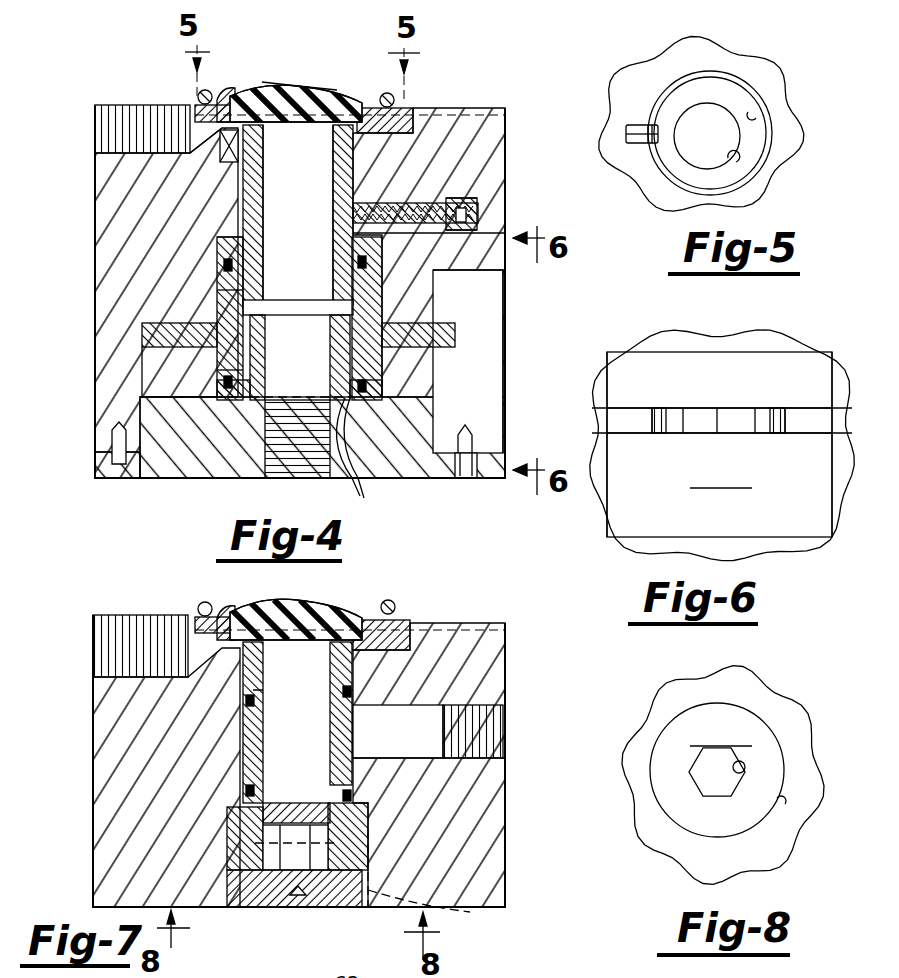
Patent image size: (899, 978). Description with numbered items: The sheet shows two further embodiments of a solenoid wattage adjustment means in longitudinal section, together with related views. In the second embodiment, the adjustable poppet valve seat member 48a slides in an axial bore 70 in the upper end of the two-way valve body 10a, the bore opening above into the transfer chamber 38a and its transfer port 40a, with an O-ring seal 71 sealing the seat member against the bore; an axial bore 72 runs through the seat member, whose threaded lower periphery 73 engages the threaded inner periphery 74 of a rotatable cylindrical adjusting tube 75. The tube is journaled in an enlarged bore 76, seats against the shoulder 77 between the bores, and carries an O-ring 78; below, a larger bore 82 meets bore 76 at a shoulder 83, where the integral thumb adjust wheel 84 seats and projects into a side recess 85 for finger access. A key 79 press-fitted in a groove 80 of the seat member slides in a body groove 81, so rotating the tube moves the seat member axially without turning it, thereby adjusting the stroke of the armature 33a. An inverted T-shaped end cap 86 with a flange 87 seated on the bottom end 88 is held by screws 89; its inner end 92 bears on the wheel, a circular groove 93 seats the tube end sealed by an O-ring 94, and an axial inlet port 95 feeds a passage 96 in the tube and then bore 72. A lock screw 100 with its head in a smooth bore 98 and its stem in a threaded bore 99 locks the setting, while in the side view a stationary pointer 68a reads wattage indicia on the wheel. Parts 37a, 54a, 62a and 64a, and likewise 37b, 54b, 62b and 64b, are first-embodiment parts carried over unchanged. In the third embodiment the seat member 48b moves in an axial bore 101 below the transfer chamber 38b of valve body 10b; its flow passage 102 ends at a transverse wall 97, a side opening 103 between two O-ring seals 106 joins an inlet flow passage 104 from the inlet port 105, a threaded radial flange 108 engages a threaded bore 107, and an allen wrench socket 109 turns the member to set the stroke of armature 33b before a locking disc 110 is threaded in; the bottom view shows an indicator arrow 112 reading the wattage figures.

In FIG. 4, the two-way valve body 10a is at (92, 322).
In FIG. 5, the two-way valve body 10a is at (798, 146).
In FIG. 6, the two-way valve body 10a is at (631, 340).
In FIG. 7, the valve body 10b is at (92, 836).
In FIG. 8, the valve body 10b is at (630, 811).
In FIG. 4, the armature 33a is at (224, 96).
In FIG. 7, the armature 33b is at (221, 606).
In FIG. 4, the mounting flange 37a is at (196, 108).
In FIG. 7, the mounting flange 37b is at (200, 620).
In FIG. 4, the transfer chamber 38a is at (398, 125).
In FIG. 7, the transfer chamber 38b is at (400, 626).
In FIG. 4, the transfer port 40a is at (122, 132).
In FIG. 4, the adjustable poppet valve seat member 48a is at (472, 158).
In FIG. 5, the adjustable poppet valve seat member 48a is at (740, 106).
In FIG. 7, the adjustable poppet valve seat member 48b is at (362, 672).
In FIG. 8, the adjustable poppet valve seat member 48b is at (676, 830).
In FIG. 4, the center axis / window 54a is at (318, 122).
In FIG. 5, the center axis / window 54a is at (767, 128).
In FIG. 7, the center axis / window 54b is at (318, 646).
In FIG. 4, the window element 62a is at (328, 86).
In FIG. 7, the window element 62b is at (335, 608).
In FIG. 4, the retaining screw 64a is at (393, 100).
In FIG. 7, the retaining screw 64b is at (393, 607).
In FIG. 6, the stationary pointer 68a is at (720, 403).
In FIG. 4, the axial bore 70 is at (260, 205).
In FIG. 5, the axial bore 70 is at (765, 120).
In FIG. 4, the O-ring seal 71 is at (208, 152).
In FIG. 4, the axial bore 72 is at (494, 126).
In FIG. 5, the axial bore 72 is at (732, 160).
In FIG. 4, the threaded lower outer periphery 73 is at (335, 240).
In FIG. 4, the threaded inner periphery 74 is at (318, 332).
In FIG. 4, the cylindrical adjusting tube 75 is at (434, 301).
In FIG. 4, the enlarged diameter bore 76 is at (220, 286).
In FIG. 4, the shoulder 77 is at (225, 240).
In FIG. 4, the O-ring 78 is at (222, 265).
In FIG. 4, the key 79 is at (238, 115).
In FIG. 5, the key 79 is at (640, 126).
In FIG. 4, the longitudinal groove 80 is at (284, 86).
In FIG. 5, the longitudinal groove 80 is at (660, 126).
In FIG. 4, the longitudinal groove 81 is at (222, 145).
In FIG. 5, the longitudinal groove 81 is at (627, 130).
In FIG. 4, the larger diameter bore 82 is at (150, 366).
In FIG. 4, the shoulder 83 is at (150, 326).
In FIG. 6, the shoulder 83 is at (635, 412).
In FIG. 4, the thumb adjust wheel 84 is at (458, 344).
In FIG. 6, the thumb adjust wheel 84 is at (780, 410).
In FIG. 4, the recess 85 is at (492, 272).
In FIG. 6, the recess 85 is at (832, 368).
In FIG. 4, the end cap 86 is at (190, 478).
In FIG. 6, the end cap 86 is at (800, 540).
In FIG. 4, the flange 87 is at (503, 455).
In FIG. 4, the bottom end 88 is at (100, 458).
In FIG. 4, the screws 89 is at (105, 470).
In FIG. 4, the inner end 92 is at (152, 340).
In FIG. 6, the inner end 92 is at (640, 426).
In FIG. 4, the circular groove 93 is at (359, 457).
In FIG. 4, the O-ring seal 94 is at (222, 384).
In FIG. 4, the inlet port 95 is at (270, 470).
In FIG. 4, the passage 96 is at (282, 306).
In FIG. 7, the transverse wall 97 is at (278, 805).
In FIG. 4, the smooth face bore 98 is at (506, 226).
In FIG. 4, the threaded bore 99 is at (470, 197).
In FIG. 4, the lock screw 100 is at (478, 212).
In FIG. 7, the axial bore 101 is at (242, 745).
In FIG. 7, the flow passage 102 is at (245, 770).
In FIG. 7, the opening 103 is at (340, 717).
In FIG. 7, the inlet flow passage 104 is at (470, 766).
In FIG. 7, the inlet port 105 is at (466, 738).
In FIG. 7, the O-ring seals 106 is at (342, 690).
In FIG. 7, the threaded bore 107 is at (432, 903).
In FIG. 8, the threaded bore 107 is at (779, 799).
In FIG. 7, the threaded radial flange 108 is at (372, 846).
In FIG. 7, the allen wrench socket 109 is at (318, 862).
In FIG. 8, the allen wrench socket 109 is at (747, 773).
In FIG. 7, the locking disc 110 is at (265, 908).
In FIG. 8, the indicator arrow 112 is at (727, 698).